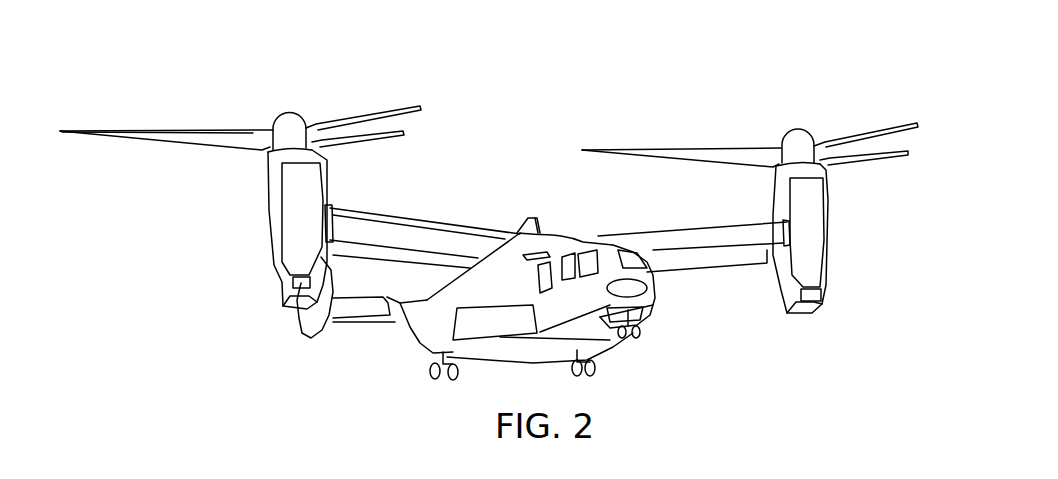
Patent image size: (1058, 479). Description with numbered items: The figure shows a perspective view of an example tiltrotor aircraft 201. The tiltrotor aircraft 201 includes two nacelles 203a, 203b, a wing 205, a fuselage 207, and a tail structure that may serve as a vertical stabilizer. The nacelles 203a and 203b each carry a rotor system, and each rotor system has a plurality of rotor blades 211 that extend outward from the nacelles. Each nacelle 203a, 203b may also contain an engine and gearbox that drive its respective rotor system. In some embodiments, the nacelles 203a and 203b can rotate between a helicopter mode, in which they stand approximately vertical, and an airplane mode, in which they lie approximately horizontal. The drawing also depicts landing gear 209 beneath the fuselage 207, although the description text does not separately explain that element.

The tiltrotor aircraft 201 is at (611, 101).
The nacelle 203a is at (245, 231).
The nacelle 203b is at (840, 249).
The wing 205 is at (464, 224).
The fuselage 207 is at (658, 297).
The landing gear 209 is at (432, 380).
The rotor blades 211 is at (367, 108).